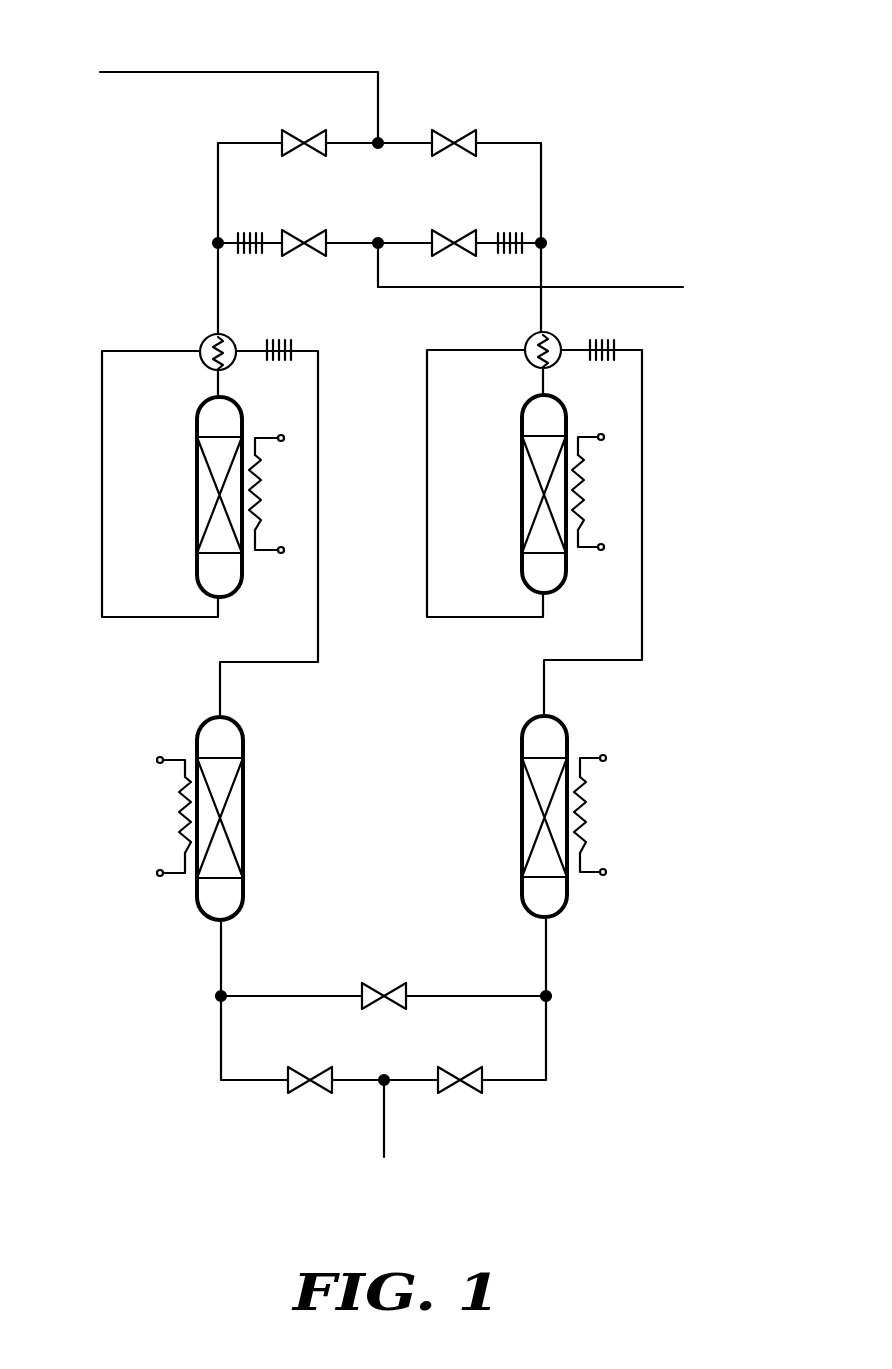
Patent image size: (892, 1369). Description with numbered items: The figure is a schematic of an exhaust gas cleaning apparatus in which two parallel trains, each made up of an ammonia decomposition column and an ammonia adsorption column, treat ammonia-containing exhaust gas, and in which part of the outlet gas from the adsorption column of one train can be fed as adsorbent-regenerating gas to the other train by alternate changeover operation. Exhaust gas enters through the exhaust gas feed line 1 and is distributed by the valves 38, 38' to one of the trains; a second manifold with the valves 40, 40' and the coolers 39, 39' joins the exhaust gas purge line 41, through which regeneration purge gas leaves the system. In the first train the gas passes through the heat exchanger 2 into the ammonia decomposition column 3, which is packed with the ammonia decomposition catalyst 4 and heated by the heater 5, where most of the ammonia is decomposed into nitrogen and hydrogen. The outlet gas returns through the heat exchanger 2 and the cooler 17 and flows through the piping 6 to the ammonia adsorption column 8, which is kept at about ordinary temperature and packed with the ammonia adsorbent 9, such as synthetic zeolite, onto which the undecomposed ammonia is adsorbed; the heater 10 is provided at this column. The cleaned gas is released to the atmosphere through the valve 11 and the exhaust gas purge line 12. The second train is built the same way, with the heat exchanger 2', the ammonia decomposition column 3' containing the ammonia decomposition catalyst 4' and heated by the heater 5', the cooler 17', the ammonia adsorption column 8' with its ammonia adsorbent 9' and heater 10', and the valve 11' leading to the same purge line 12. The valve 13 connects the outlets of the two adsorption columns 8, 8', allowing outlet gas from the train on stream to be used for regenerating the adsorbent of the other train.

The exhaust gas feed line 1 is at (192, 72).
The valve 38 is at (280, 115).
The valve 38' is at (455, 98).
The valve 40 is at (242, 194).
The valve 40' is at (513, 188).
The cooler 39 is at (209, 222).
The cooler 39' is at (560, 217).
The exhaust gas purge line 41 is at (643, 287).
The heat exchanger 2 is at (197, 312).
The heat exchanger 2' is at (504, 328).
The cooler 17 is at (321, 370).
The cooler 17' is at (654, 374).
The ammonia decomposition column 3 is at (193, 483).
The ammonia decomposition column 3' is at (515, 484).
The ammonia decomposition catalyst 4 is at (187, 495).
The ammonia decomposition catalyst 4' is at (508, 494).
The heater 5 is at (303, 494).
The heater 5' is at (630, 492).
The piping 6 is at (122, 620).
The ammonia adsorption column 8 is at (269, 818).
The ammonia adsorption column 8' is at (504, 821).
The ammonia adsorbent 9 is at (252, 818).
The ammonia adsorbent 9' is at (501, 817).
The heater 10 is at (124, 816).
The heater 10' is at (647, 815).
The valve 13 is at (387, 990).
The valve 11 is at (287, 1124).
The valve 11' is at (502, 1124).
The exhaust gas purge line 12 is at (387, 1143).